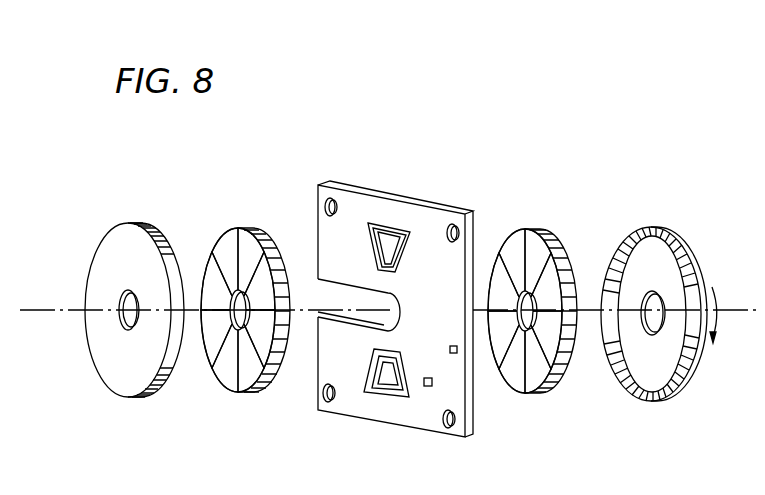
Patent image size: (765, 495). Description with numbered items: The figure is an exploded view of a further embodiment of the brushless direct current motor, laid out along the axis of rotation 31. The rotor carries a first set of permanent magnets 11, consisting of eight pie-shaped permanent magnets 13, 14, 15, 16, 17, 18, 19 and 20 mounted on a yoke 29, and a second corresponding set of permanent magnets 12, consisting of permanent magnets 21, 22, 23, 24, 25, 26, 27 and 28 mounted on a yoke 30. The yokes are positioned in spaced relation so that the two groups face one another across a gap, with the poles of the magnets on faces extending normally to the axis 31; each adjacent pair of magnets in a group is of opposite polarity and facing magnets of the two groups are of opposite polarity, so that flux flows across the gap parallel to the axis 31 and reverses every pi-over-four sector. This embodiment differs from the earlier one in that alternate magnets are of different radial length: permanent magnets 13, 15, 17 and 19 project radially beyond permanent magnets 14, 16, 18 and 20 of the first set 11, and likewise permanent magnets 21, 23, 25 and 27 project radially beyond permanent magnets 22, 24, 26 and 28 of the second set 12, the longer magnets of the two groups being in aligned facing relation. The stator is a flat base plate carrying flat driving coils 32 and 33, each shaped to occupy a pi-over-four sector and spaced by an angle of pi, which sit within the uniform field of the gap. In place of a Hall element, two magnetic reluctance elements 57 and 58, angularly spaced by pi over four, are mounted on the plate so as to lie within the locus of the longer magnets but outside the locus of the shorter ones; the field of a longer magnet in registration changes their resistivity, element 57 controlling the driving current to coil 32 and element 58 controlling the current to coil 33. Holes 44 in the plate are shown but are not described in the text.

The first set of permanent magnets 11 is at (245, 295).
The second set of permanent magnets 12 is at (532, 288).
The permanent magnet 13 is at (247, 264).
The permanent magnet 14 is at (252, 300).
The permanent magnet 15 is at (256, 330).
The permanent magnet 16 is at (244, 357).
The permanent magnet 17 is at (217, 369).
The permanent magnet 18 is at (212, 329).
The permanent magnet 19 is at (209, 297).
The permanent magnet 20 is at (226, 272).
The permanent magnet 21 is at (531, 262).
The permanent magnet 22 is at (539, 305).
The permanent magnet 23 is at (547, 335).
The permanent magnet 24 is at (529, 360).
The permanent magnet 25 is at (507, 374).
The permanent magnet 26 is at (497, 332).
The permanent magnet 27 is at (492, 302).
The permanent magnet 28 is at (509, 275).
The yoke 29 is at (134, 295).
The yoke 30 is at (659, 296).
The axis of rotation 31 is at (389, 331).
The driving coil 32 is at (392, 211).
The driving coil 33 is at (383, 405).
The mounting holes 44 is at (369, 313).
The magnetic reluctance element 57 is at (442, 331).
The magnetic reluctance element 58 is at (469, 405).